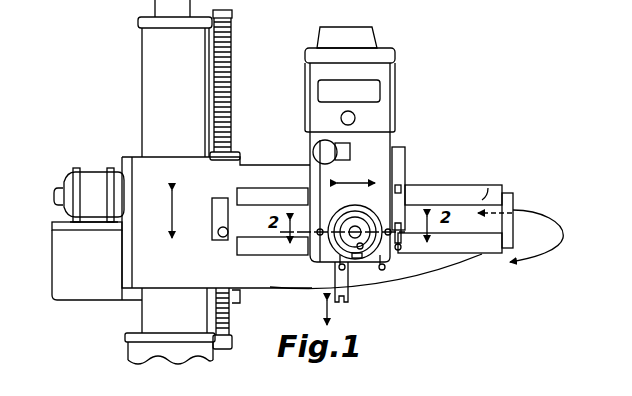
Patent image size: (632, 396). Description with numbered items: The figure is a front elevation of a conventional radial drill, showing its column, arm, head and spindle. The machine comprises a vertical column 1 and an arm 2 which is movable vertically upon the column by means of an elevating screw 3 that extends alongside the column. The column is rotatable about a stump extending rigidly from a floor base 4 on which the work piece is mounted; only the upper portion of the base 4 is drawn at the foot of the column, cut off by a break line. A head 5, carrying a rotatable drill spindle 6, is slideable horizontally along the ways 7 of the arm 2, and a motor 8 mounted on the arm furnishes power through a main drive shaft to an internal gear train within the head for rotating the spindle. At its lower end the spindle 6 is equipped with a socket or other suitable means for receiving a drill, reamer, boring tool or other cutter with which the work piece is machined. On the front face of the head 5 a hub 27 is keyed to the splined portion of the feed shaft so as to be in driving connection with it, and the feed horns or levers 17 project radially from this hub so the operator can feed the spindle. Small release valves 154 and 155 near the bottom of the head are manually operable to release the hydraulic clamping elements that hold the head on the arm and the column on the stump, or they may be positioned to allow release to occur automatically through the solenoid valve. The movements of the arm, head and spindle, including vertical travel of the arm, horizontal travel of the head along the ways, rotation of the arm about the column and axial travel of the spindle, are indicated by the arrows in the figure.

The column 1 is at (154, 90).
The arm 2 is at (427, 180).
The elevating screw 3 is at (231, 80).
The base 4 is at (180, 350).
The head 5 is at (376, 152).
The drill spindle 6 is at (332, 278).
The ways 7 is at (488, 188).
The motor 8 is at (72, 175).
The feed horns or levers 17 is at (327, 226).
The hub 27 is at (359, 224).
The release valve 154 is at (335, 267).
The release valve 155 is at (383, 270).